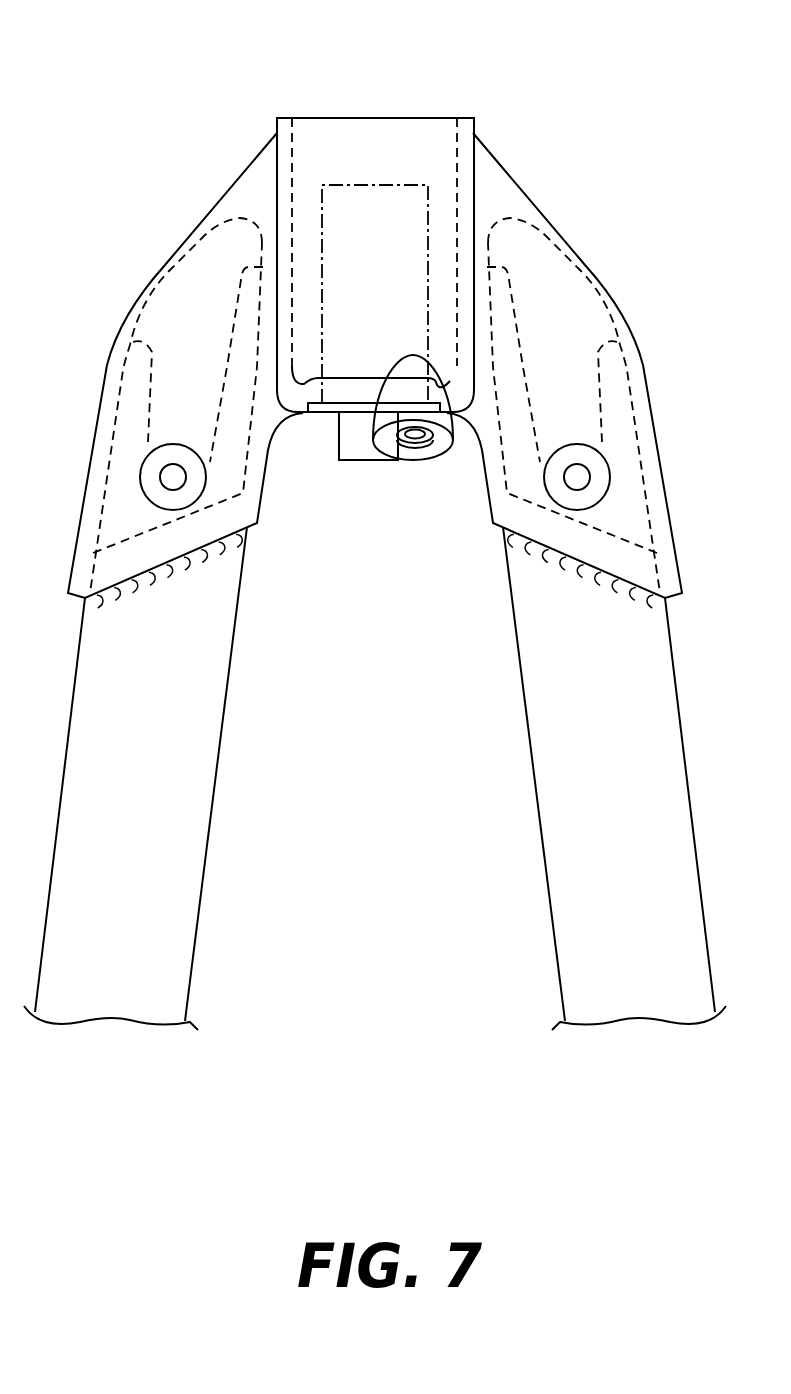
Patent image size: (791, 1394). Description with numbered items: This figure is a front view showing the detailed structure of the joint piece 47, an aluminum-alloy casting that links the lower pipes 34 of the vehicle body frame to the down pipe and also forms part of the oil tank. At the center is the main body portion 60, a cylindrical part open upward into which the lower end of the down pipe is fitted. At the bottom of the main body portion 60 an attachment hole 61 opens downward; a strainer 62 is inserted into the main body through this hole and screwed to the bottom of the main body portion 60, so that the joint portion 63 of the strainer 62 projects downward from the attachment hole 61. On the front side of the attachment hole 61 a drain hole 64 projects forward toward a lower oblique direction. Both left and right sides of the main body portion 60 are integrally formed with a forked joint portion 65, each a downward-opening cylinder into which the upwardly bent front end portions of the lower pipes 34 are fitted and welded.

The joint piece 47 is at (163, 186).
The main body portion 60 is at (410, 130).
The attachment hole 61 is at (332, 357).
The strainer 62 is at (368, 182).
The joint portion 63 is at (350, 455).
The drain hole 64 is at (412, 450).
The forked joint portion 65 is at (103, 408).
The lower pipes 34 is at (198, 777).